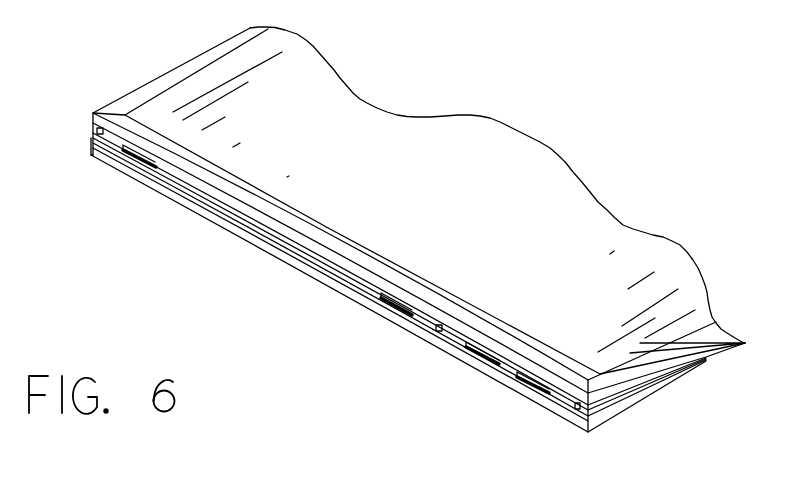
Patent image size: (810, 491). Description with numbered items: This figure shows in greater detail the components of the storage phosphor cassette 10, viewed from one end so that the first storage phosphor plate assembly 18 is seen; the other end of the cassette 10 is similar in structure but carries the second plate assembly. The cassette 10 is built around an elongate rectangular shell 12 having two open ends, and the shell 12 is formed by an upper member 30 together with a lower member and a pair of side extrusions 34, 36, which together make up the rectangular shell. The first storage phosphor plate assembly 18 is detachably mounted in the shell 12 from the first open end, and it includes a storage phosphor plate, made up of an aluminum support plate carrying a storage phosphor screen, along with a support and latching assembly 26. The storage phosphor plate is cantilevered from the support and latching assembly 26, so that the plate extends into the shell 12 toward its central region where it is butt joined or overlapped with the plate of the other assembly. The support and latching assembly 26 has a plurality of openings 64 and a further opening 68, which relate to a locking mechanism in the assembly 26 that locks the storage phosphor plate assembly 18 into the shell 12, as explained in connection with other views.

The storage phosphor cassette 10 is at (163, 40).
The elongate rectangular shell 12 is at (549, 94).
The first storage phosphor plate assembly 18 is at (532, 424).
The support and latching assembly 26 is at (238, 262).
The upper member 30 is at (378, 113).
The side extrusion 34 is at (677, 376).
The side extrusion 36 is at (118, 95).
The openings 64 is at (131, 157).
The opening 68 is at (437, 333).